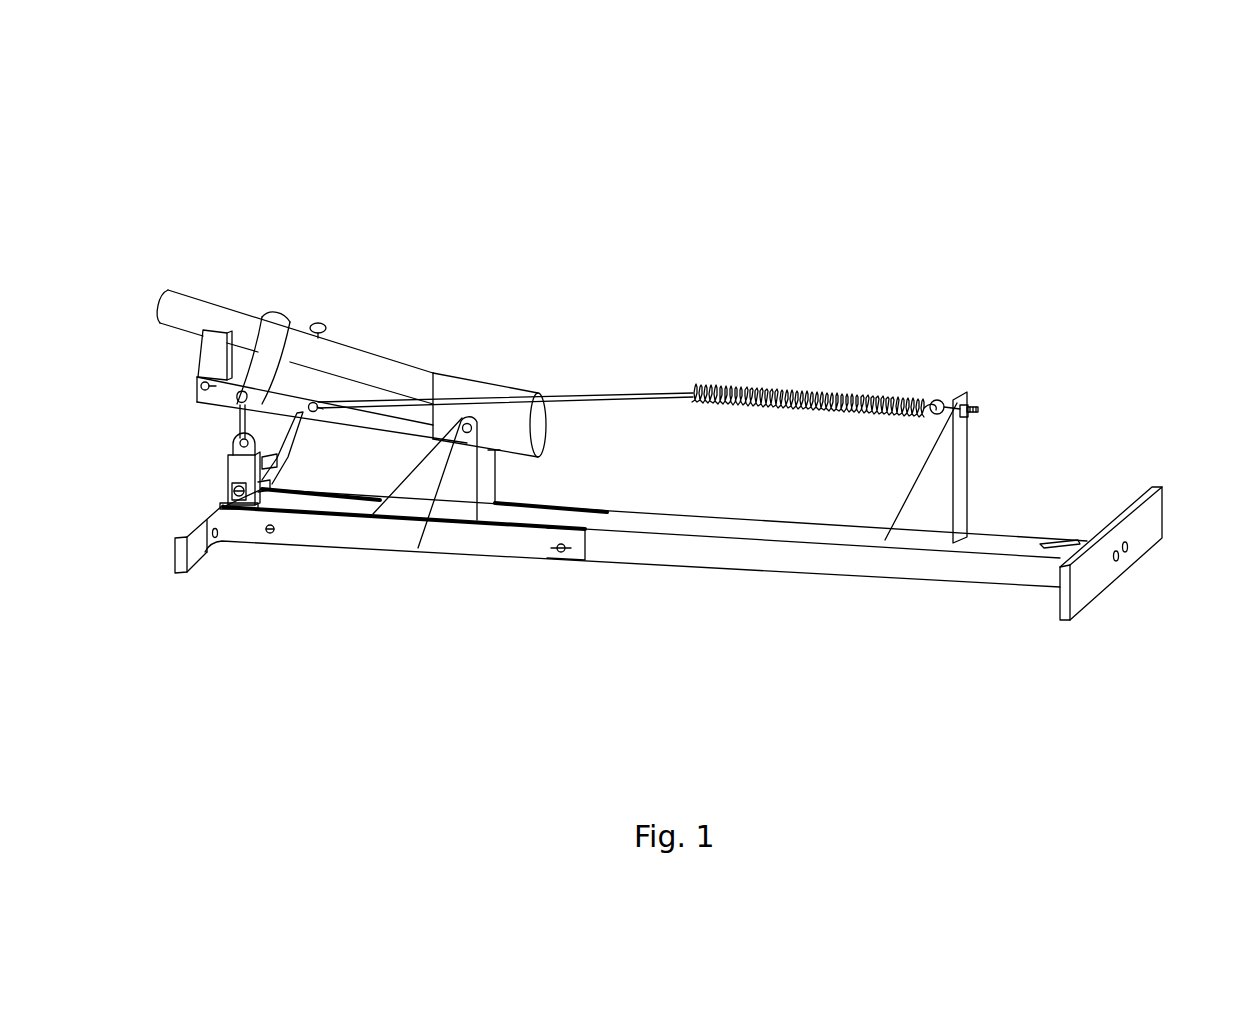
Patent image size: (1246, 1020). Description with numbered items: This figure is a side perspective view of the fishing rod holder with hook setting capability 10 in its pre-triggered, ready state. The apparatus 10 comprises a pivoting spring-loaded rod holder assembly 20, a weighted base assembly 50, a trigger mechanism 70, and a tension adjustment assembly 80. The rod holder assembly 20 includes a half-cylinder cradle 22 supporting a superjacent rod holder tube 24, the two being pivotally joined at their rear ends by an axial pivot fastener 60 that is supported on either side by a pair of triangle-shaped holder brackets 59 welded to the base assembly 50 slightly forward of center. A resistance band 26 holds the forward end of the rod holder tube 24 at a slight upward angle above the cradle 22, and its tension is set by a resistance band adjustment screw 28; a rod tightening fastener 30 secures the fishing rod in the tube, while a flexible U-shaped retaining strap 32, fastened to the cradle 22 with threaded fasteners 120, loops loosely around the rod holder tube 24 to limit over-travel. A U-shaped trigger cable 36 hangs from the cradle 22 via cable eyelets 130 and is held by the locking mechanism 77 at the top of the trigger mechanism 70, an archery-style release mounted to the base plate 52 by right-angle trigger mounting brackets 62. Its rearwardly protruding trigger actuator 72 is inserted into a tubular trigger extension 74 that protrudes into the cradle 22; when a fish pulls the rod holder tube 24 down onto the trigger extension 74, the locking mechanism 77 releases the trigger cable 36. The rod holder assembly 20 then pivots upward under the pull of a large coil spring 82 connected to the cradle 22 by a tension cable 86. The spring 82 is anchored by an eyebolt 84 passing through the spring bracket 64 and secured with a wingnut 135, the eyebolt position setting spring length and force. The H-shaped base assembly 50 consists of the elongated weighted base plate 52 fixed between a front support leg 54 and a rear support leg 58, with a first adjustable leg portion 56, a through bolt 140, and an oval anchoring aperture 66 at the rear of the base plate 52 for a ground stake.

The fishing rod holder with hook setting capability 10 is at (1083, 133).
The rod holder assembly 20 is at (157, 287).
The cradle 22 is at (290, 402).
The rod holder tube 24 is at (183, 300).
The resistance band 26 is at (203, 350).
The resistance band adjustment screw 28 is at (203, 388).
The rod tightening fastener 30 is at (323, 325).
The retaining strap 32 is at (264, 337).
The trigger cable 36 is at (237, 422).
The base assembly 50 is at (785, 525).
The base plate 52 is at (326, 512).
The front support leg 54 is at (176, 545).
The first adjustable leg portion 56 is at (365, 514).
The rear support leg 58 is at (1152, 518).
The holder bracket 59 is at (460, 500).
The pivot fastener 60 is at (418, 548).
The trigger mounting bracket 62 is at (232, 490).
The spring bracket 64 is at (945, 505).
The anchoring aperture 66 is at (1052, 540).
The trigger mechanism 70 is at (236, 468).
The trigger actuator 72 is at (262, 498).
The trigger extension 74 is at (290, 456).
The locking mechanism 77 is at (231, 447).
The tension adjustment assembly 80 is at (970, 378).
The spring 82 is at (827, 397).
The eyebolt 84 is at (943, 400).
The tension cable 86 is at (582, 400).
The threaded fastener 120 is at (316, 411).
The cable eyelet 130 is at (293, 400).
The wingnut 135 is at (562, 553).
The through bolt 140 is at (272, 534).